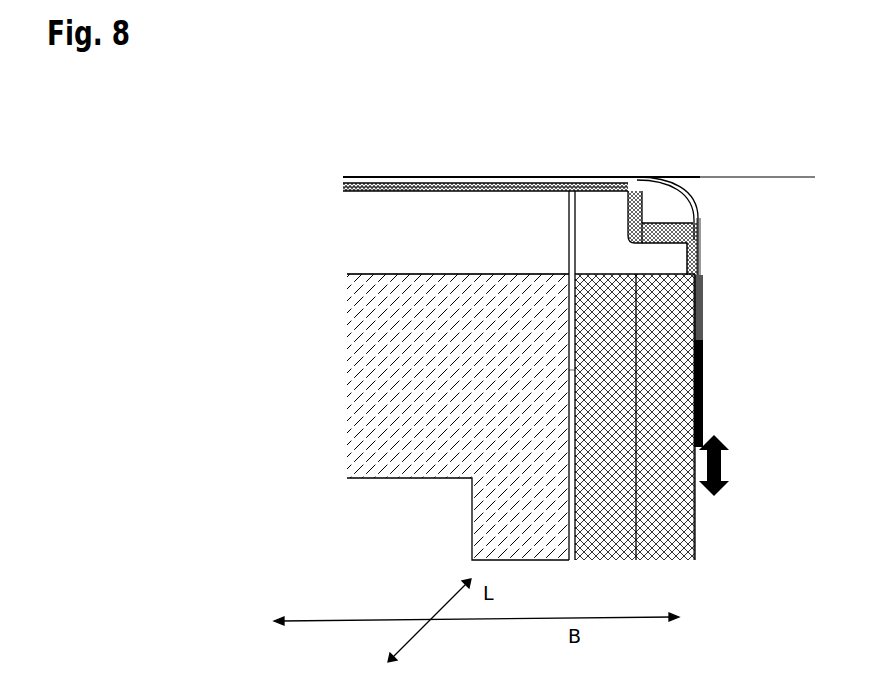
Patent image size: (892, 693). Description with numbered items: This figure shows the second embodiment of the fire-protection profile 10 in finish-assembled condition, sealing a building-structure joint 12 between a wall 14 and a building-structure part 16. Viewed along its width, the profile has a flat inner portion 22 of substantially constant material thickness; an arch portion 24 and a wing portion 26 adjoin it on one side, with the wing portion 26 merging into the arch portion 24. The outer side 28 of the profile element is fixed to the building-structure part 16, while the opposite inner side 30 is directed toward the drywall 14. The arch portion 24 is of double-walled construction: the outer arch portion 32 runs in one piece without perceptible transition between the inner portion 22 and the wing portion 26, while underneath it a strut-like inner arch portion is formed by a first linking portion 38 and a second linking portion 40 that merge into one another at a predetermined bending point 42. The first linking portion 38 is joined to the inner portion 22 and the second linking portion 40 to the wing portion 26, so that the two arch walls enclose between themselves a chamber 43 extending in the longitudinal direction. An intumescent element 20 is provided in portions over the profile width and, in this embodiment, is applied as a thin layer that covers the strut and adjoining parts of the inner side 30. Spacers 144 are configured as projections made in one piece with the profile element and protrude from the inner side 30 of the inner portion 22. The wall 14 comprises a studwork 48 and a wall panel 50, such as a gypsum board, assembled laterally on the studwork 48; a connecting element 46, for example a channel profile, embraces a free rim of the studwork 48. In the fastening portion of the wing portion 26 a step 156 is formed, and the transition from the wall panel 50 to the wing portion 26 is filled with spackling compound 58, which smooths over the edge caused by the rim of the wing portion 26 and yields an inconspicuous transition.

The fire-protection profile 10 is at (283, 117).
The building-structure joint 12 is at (460, 212).
The wall 14 is at (312, 455).
The building-structure part 16 is at (372, 137).
The intumescent element 20 is at (606, 177).
The inner portion 22 is at (494, 190).
The arch portion 24 is at (687, 174).
The wing portion 26 is at (704, 303).
The outer side 28 is at (412, 171).
The inner side 30 is at (420, 197).
The outer arch portion 32 is at (660, 188).
The first linking portion 38 is at (628, 177).
The second linking portion 40 is at (673, 225).
The predetermined bending point 42 is at (646, 218).
The chamber 43 is at (668, 205).
The connecting element 46 is at (570, 375).
The studwork 48 is at (460, 350).
The wall panel 50 is at (673, 538).
The spackling compound 58 is at (702, 363).
The spacer 144 is at (580, 192).
The step 156 is at (704, 277).